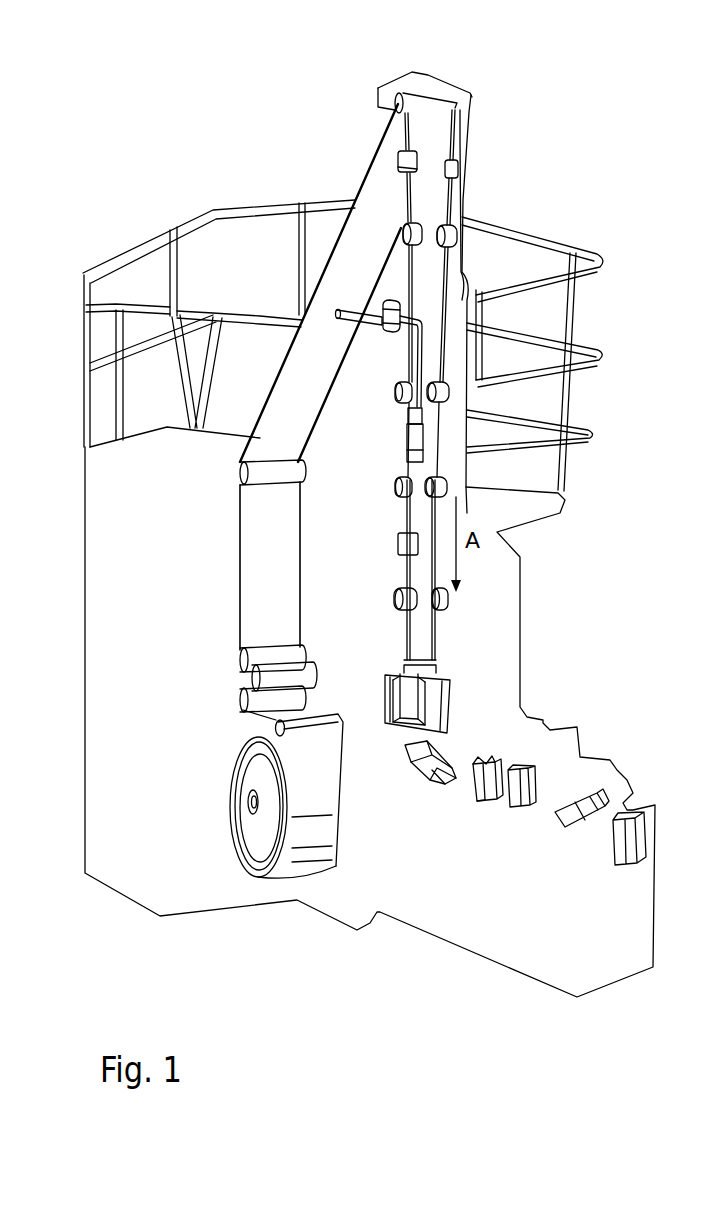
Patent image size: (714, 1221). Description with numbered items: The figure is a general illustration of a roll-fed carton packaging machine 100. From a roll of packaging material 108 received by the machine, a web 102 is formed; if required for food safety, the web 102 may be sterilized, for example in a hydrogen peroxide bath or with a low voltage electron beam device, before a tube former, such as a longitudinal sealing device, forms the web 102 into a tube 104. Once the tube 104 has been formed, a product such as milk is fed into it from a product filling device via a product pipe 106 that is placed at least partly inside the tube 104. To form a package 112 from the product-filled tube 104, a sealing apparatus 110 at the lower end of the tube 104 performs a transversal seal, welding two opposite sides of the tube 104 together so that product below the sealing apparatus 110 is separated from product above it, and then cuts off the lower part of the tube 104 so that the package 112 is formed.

The packaging machine 100 is at (568, 136).
The web 102 is at (253, 580).
The tube 104 is at (405, 373).
The product pipe 106 is at (376, 302).
The packaging material 108 is at (425, 642).
The sealing apparatus 110 is at (437, 710).
The package 112 is at (413, 770).